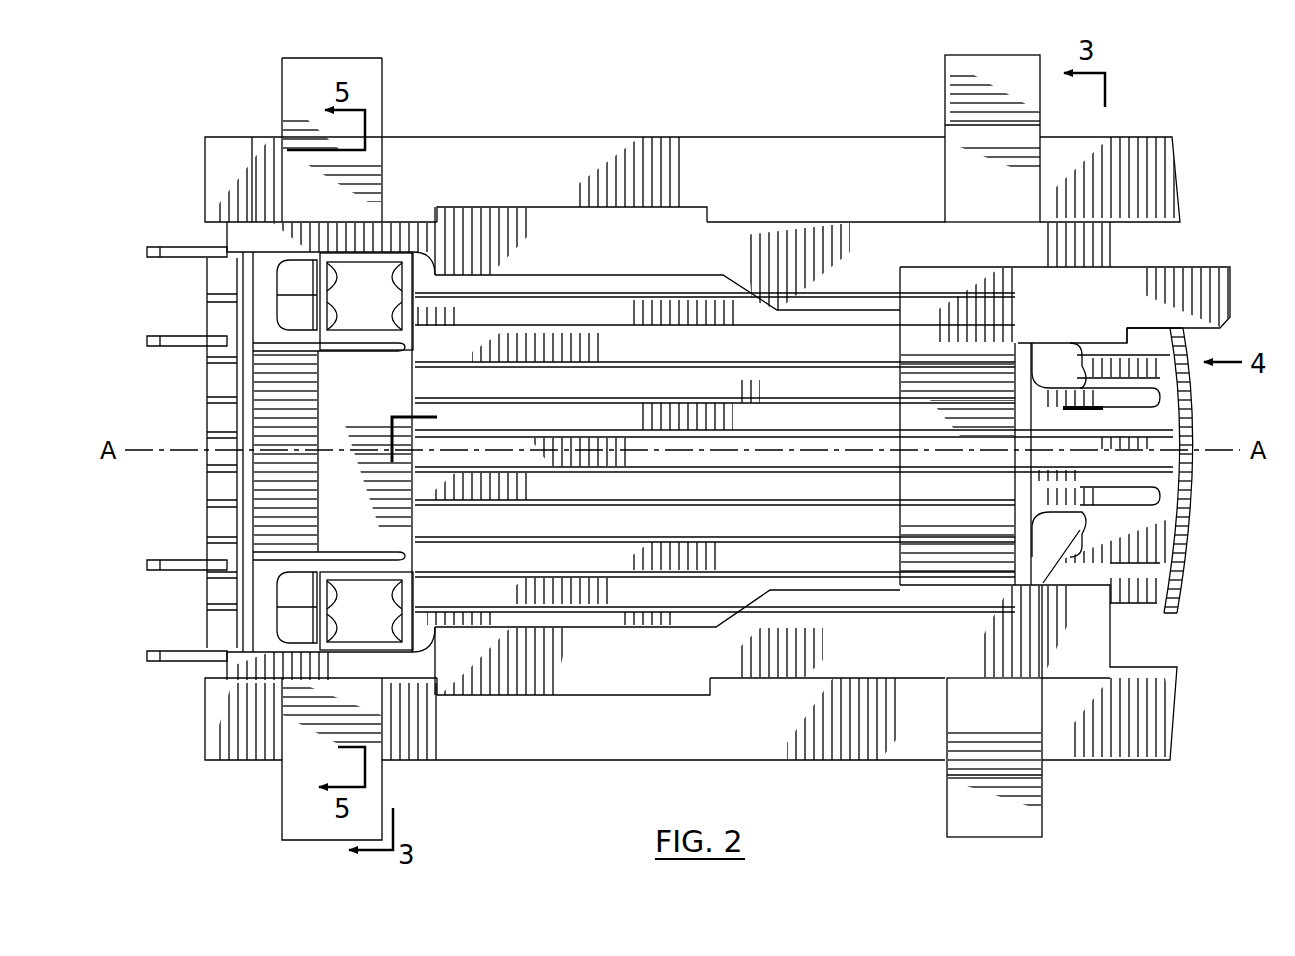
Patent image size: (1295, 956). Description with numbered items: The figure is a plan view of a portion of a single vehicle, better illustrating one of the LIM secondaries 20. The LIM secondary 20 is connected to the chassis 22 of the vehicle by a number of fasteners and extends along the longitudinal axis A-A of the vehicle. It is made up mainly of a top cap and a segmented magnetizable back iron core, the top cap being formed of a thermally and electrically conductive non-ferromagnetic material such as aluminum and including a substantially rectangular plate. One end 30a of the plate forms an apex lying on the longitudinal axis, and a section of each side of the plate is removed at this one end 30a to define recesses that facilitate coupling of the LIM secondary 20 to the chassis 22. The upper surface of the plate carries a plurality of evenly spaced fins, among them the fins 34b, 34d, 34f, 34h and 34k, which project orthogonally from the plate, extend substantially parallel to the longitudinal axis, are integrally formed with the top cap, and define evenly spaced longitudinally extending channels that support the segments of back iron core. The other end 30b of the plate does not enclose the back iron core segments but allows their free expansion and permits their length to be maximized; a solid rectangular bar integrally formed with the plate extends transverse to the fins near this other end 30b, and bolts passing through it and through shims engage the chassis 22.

The LIM secondary 20 is at (483, 284).
The chassis 22 is at (919, 98).
The one end of the plate 30a is at (1196, 570).
The other end of the plate 30b is at (191, 687).
The fin 34b is at (237, 608).
The fin 34d is at (237, 540).
The fin 34f is at (237, 469).
The fin 34h is at (237, 400).
The fin 34k is at (237, 298).